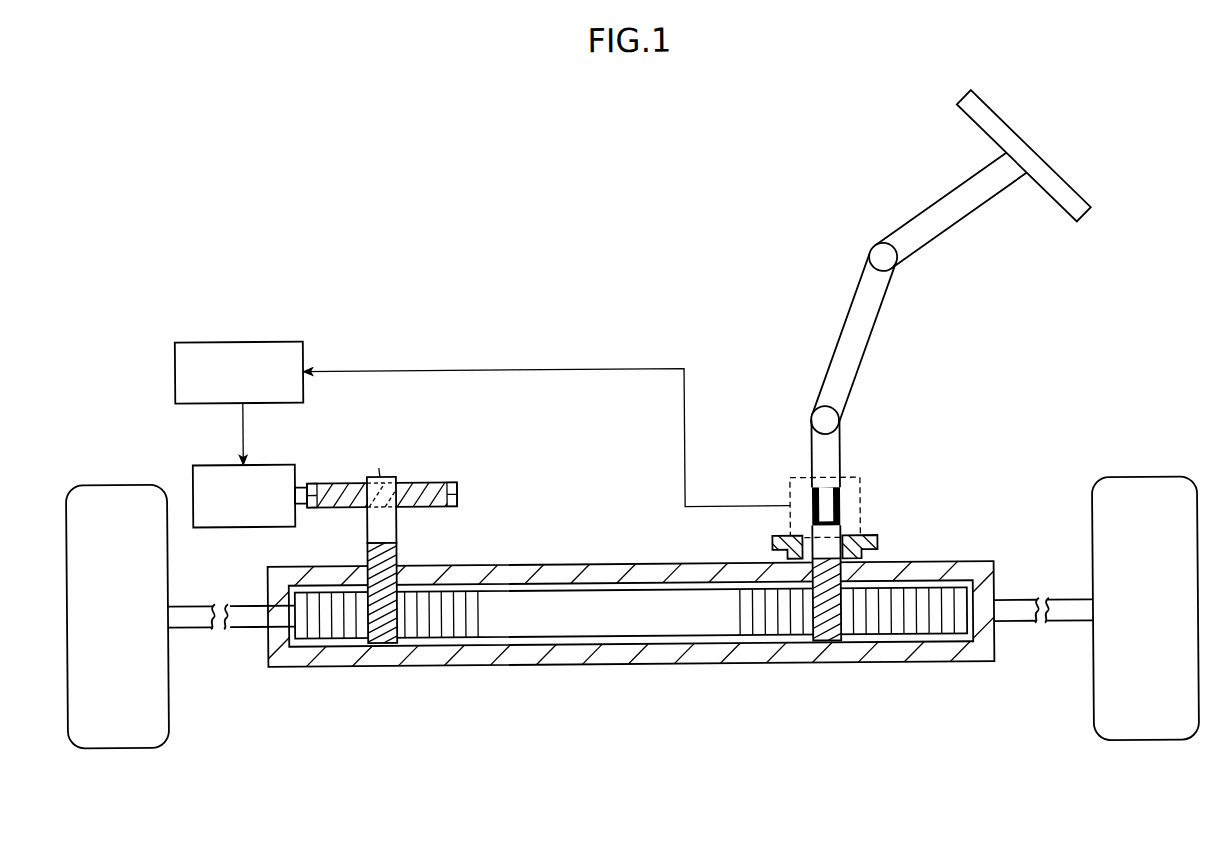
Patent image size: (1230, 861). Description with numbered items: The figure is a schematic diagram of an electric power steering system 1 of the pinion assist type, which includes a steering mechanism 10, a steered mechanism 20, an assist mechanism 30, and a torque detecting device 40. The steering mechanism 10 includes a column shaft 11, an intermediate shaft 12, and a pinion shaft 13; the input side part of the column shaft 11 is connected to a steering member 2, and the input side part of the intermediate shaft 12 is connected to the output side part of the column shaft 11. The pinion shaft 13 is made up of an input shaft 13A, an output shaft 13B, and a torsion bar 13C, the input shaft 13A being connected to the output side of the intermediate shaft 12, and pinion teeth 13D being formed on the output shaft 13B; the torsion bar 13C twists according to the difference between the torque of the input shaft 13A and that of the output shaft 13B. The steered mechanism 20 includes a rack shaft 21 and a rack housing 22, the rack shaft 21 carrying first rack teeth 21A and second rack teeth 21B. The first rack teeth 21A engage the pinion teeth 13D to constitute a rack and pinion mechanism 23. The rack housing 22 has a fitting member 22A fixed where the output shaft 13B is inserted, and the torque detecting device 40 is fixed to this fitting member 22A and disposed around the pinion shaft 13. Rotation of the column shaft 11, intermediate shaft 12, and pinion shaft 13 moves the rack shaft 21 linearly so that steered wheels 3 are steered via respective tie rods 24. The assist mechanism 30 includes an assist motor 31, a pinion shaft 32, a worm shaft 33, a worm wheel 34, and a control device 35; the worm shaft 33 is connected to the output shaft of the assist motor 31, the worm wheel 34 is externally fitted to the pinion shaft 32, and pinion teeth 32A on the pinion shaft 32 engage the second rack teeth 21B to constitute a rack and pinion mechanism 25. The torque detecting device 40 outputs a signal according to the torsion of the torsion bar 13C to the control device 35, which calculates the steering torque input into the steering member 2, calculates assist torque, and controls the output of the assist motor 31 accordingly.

The electric power steering system 1 is at (520, 199).
The steering member 2 is at (1007, 116).
The steered wheels 3 is at (119, 749).
The steering mechanism 10 is at (791, 168).
The column shaft 11 is at (946, 205).
The intermediate shaft 12 is at (870, 325).
The pinion shaft 13 is at (940, 435).
The input shaft 13A is at (833, 454).
The output shaft 13B is at (829, 540).
The torsion bar 13C is at (831, 502).
The pinion teeth 13D is at (822, 635).
The steered mechanism 20 is at (614, 502).
The rack shaft 21 is at (630, 613).
The first rack teeth 21A is at (892, 635).
The second rack teeth 21B is at (451, 636).
The rack housing 22 is at (610, 655).
The fitting member 22A is at (772, 538).
The rack and pinion mechanism 23 is at (938, 697).
The tie rods 24 is at (193, 625).
The rack and pinion mechanism 25 is at (495, 697).
The assist mechanism 30 is at (156, 321).
The assist motor 31 is at (209, 460).
The pinion shaft 32 is at (391, 526).
The pinion teeth 32A is at (384, 645).
The worm shaft 33 is at (382, 456).
The worm wheel 34 is at (443, 482).
The control device 35 is at (240, 337).
The torque detecting device 40 is at (799, 476).